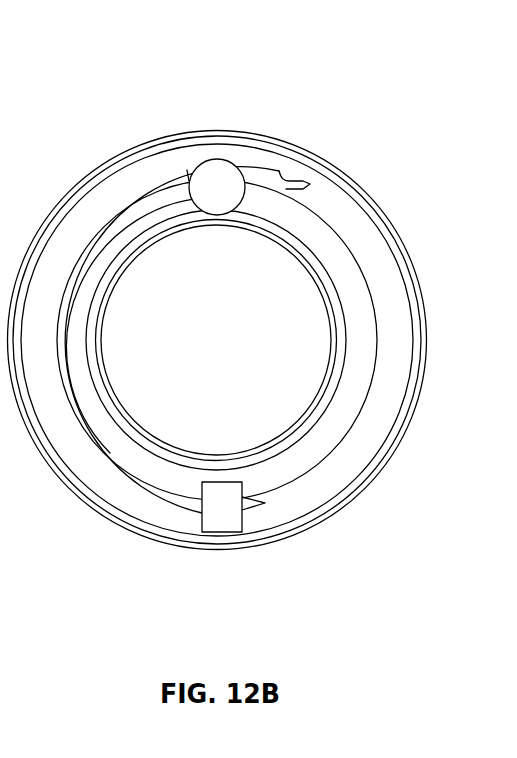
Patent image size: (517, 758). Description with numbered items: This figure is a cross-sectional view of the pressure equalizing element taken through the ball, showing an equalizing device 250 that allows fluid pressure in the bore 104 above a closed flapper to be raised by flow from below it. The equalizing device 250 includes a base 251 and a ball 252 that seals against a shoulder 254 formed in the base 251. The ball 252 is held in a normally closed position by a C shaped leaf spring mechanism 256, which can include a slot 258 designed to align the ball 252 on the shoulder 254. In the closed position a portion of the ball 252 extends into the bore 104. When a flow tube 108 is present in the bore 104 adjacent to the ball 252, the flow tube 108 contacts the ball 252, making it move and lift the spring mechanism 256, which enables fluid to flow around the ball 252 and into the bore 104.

The equalizing device 250 is at (408, 40).
The base 251 is at (282, 203).
The ball 252 is at (220, 177).
The shoulder 254 is at (173, 205).
The C shaped leaf spring mechanism 256 is at (283, 181).
The slot 258 is at (233, 150).
The bore 104 is at (290, 272).
The flow tube 108 is at (338, 300).